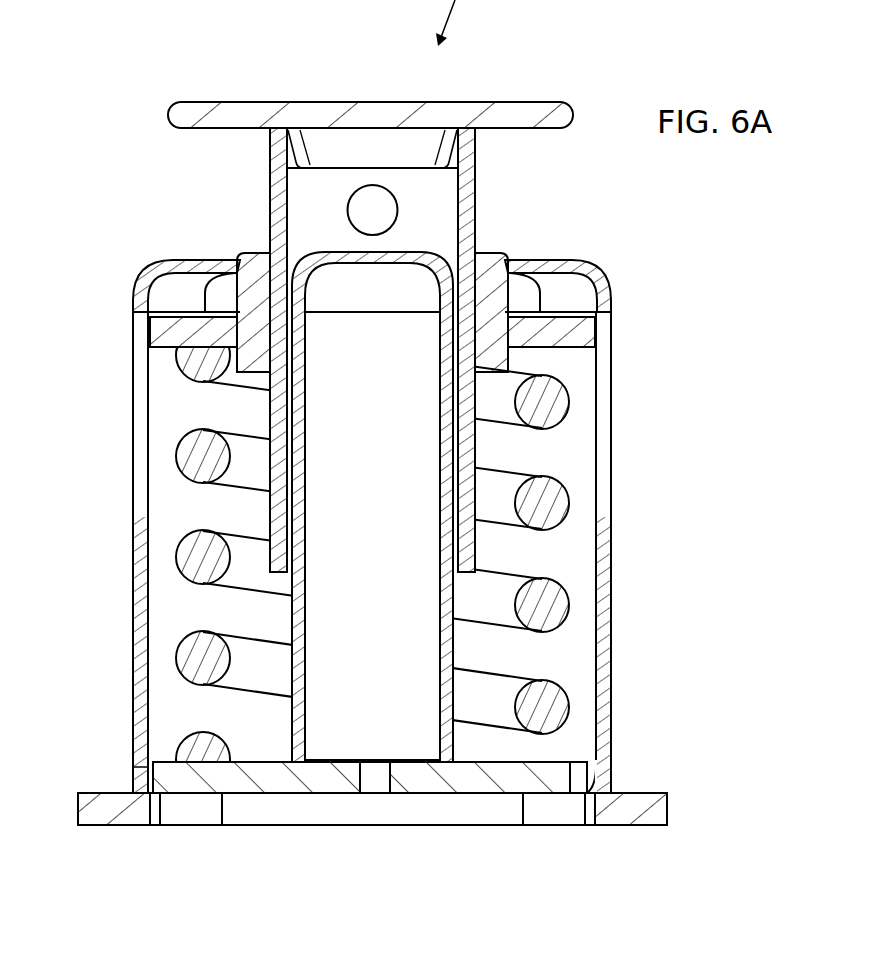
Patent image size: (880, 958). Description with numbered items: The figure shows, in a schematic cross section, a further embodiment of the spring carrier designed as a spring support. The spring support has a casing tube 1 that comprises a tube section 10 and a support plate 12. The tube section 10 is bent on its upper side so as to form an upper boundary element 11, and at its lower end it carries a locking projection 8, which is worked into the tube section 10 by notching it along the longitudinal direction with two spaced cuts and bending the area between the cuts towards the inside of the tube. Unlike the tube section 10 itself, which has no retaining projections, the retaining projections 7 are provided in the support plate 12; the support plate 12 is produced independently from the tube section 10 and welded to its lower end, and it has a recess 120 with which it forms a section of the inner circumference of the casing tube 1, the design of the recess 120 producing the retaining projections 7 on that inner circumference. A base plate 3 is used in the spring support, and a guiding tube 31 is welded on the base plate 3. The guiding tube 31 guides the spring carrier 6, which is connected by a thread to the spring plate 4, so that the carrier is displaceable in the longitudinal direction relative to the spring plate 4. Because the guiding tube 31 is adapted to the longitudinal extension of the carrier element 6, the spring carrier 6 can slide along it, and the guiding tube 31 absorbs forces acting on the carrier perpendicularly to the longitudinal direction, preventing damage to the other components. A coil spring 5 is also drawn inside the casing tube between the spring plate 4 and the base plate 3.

The casing tube 1 is at (122, 583).
The base plate 3 is at (498, 780).
The spring plate 4 is at (488, 277).
The spring 5 is at (548, 408).
The spring carrier 6 is at (545, 117).
The retaining projections 7 is at (185, 815).
The locking projection 8 is at (612, 775).
The tube section 10 is at (605, 618).
The upper boundary element 11 is at (592, 280).
The support plate 12 is at (650, 812).
The guiding tube 31 is at (292, 764).
The recess 120 is at (367, 812).